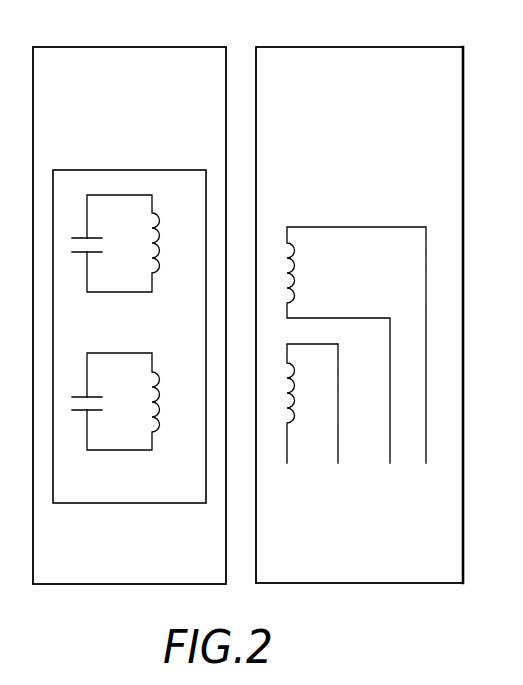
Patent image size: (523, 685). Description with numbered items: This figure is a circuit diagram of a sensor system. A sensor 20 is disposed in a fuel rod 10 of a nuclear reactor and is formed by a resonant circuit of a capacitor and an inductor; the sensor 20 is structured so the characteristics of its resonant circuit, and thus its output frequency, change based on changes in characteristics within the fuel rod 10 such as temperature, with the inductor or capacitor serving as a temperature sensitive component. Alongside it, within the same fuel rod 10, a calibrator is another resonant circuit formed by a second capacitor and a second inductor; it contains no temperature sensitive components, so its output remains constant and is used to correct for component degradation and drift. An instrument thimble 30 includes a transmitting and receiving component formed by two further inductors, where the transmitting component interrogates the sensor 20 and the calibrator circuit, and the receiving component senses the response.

The fuel rod 10 is at (120, 47).
The sensor 20 is at (123, 170).
The instrument thimble 30 is at (345, 47).